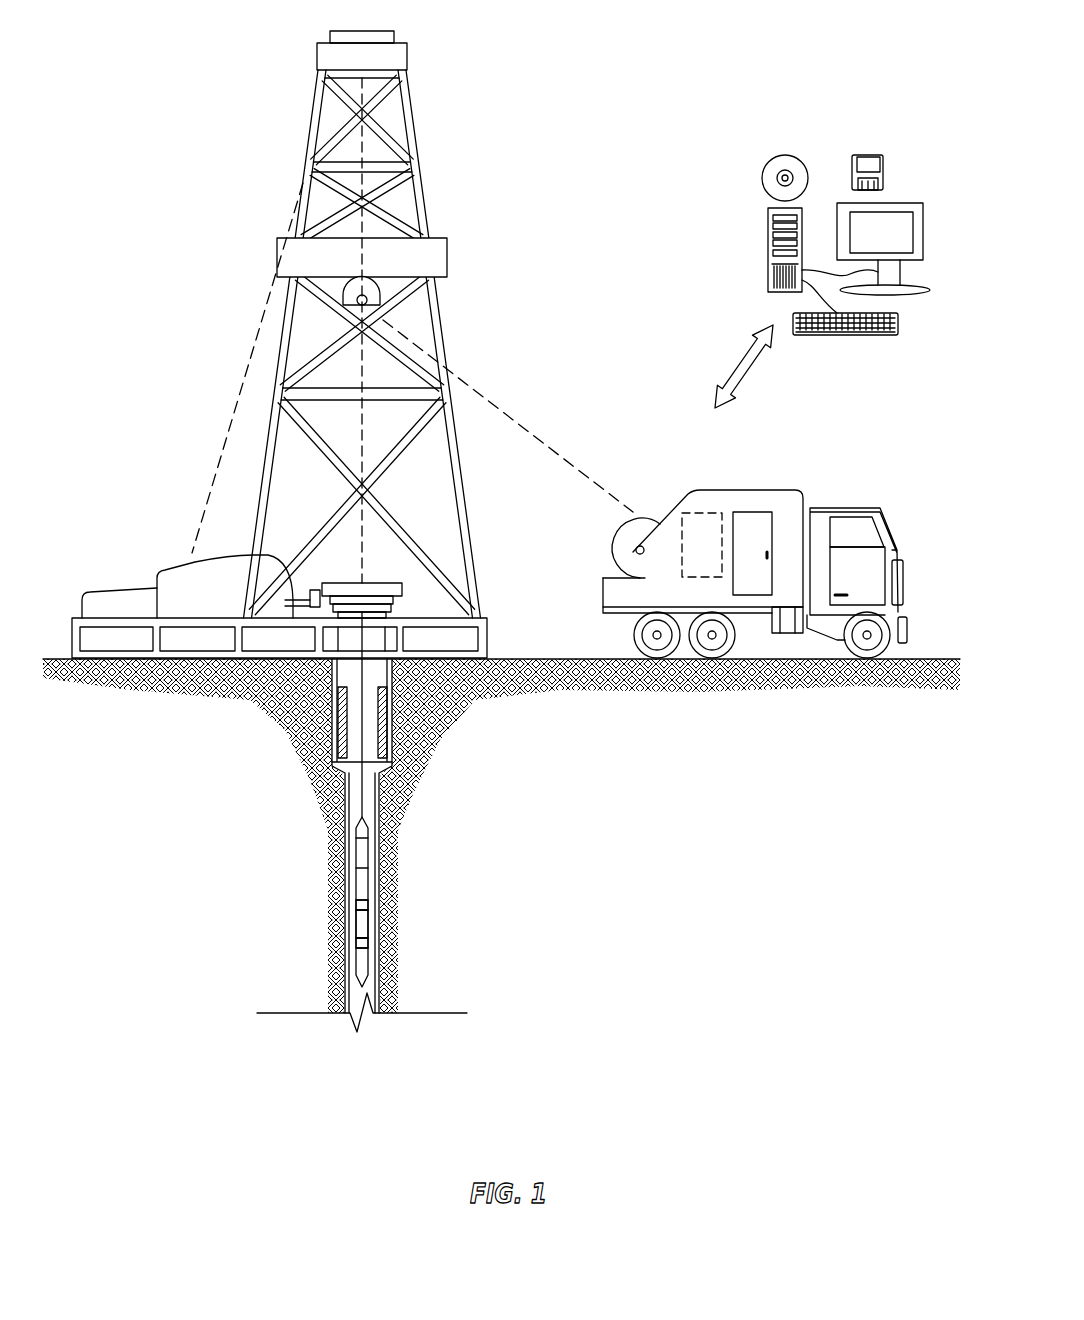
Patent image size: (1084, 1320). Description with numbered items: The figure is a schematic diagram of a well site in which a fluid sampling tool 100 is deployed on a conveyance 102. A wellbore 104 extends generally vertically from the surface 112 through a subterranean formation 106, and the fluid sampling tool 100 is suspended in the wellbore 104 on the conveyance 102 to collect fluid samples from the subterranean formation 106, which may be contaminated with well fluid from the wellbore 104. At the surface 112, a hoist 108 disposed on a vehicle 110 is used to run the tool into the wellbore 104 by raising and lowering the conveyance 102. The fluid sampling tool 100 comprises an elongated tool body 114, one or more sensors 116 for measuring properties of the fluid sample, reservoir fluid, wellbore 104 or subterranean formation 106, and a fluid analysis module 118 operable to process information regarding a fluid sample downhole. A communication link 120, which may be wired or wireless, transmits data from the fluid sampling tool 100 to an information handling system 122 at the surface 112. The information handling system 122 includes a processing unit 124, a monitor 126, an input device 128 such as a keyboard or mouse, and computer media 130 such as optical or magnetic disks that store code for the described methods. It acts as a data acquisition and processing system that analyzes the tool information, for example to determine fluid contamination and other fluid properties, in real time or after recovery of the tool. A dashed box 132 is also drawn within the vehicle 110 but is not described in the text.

The fluid sampling tool 100 is at (370, 907).
The conveyance 102 is at (360, 786).
The wellbore 104 is at (343, 840).
The subterranean formation 106 is at (566, 845).
The hoist 108 is at (610, 542).
The vehicle 110 is at (775, 490).
The surface 112 is at (915, 660).
The tool body 114 is at (354, 927).
The sensors 116 is at (370, 942).
The fluid analysis module 118 is at (354, 907).
The communication link 120 is at (753, 373).
The information handling system 122 is at (705, 143).
The processing unit 124 is at (770, 223).
The monitor 126 is at (903, 200).
The input device 128 is at (890, 336).
The computer media 130 is at (872, 155).
The control unit 132 is at (703, 512).